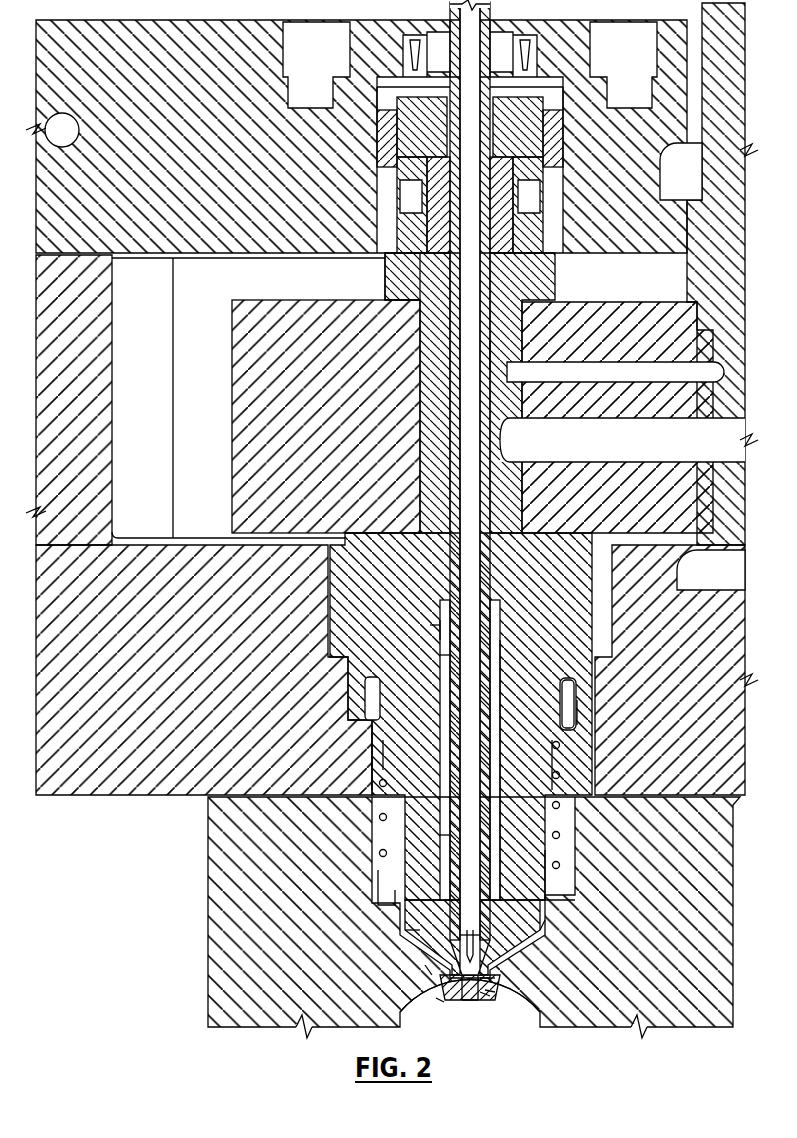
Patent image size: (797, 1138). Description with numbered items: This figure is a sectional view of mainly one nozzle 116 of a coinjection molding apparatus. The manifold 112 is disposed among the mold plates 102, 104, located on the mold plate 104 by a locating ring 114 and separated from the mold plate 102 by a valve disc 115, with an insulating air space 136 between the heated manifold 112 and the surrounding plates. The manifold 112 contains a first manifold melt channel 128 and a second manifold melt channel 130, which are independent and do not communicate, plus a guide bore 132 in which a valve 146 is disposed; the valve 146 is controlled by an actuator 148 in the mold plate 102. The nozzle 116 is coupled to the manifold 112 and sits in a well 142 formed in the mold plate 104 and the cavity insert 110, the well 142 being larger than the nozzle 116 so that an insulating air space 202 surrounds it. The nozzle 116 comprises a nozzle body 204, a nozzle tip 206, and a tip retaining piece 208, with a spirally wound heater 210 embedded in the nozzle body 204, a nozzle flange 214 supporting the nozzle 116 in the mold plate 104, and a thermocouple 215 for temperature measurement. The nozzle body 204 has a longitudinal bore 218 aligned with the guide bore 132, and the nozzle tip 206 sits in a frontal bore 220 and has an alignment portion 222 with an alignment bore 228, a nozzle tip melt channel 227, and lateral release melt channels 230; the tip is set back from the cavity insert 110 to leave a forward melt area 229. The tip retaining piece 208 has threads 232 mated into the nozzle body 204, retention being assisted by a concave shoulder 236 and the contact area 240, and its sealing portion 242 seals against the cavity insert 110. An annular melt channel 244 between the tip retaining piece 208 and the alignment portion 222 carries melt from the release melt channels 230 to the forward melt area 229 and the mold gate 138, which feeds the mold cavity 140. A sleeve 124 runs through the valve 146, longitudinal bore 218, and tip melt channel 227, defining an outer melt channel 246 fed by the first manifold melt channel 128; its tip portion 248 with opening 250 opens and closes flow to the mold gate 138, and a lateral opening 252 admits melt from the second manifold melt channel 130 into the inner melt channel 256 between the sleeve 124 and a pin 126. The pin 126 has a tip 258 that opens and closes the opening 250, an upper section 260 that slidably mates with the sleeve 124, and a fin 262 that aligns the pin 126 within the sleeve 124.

The mold plate 102 is at (174, 192).
The mold plate 104 is at (194, 680).
The cavity insert 110 is at (277, 896).
The manifold 112 is at (299, 434).
The locating ring 114 is at (700, 568).
The valve disc 115 is at (385, 275).
The nozzle 116 is at (353, 610).
The sleeve 124 is at (494, 652).
The pin 126 is at (492, 630).
The first manifold melt channel 128 is at (626, 445).
The second manifold melt channel 130 is at (640, 380).
The guide bore 132 is at (420, 515).
The insulating air space 136 is at (223, 294).
The mold gate 138 is at (485, 996).
The mold cavity 140 is at (476, 1033).
The well 142 is at (376, 780).
The valve 146 is at (405, 372).
The actuator 148 is at (352, 152).
The insulating air space 202 is at (372, 738).
The nozzle body 204 is at (573, 758).
The nozzle tip 206 is at (570, 862).
The tip retaining piece 208 is at (565, 882).
The spirally wound heater 210 is at (566, 778).
The nozzle flange 214 is at (590, 712).
The thermocouple 215 is at (378, 896).
The longitudinal bore 218 is at (575, 688).
The frontal bore 220 is at (382, 752).
The alignment portion 222 is at (450, 955).
The nozzle tip melt channel 227 is at (450, 840).
The alignment bore 228 is at (502, 972).
The forward melt area 229 is at (432, 977).
The release melt channel 230 is at (552, 906).
The threads 232 is at (562, 835).
The concave shoulder 236 is at (566, 732).
The contact area 240 is at (568, 800).
The sealing portion 242 is at (546, 926).
The annular melt channel 244 is at (422, 945).
The outer melt channel 246 is at (440, 630).
The tip portion 248 is at (496, 980).
The opening 250 is at (497, 992).
The lateral opening 252 is at (492, 355).
The inner melt channel 256 is at (446, 660).
The tip 258 is at (440, 1000).
The upper section 260 is at (480, 326).
The fin 262 is at (475, 935).